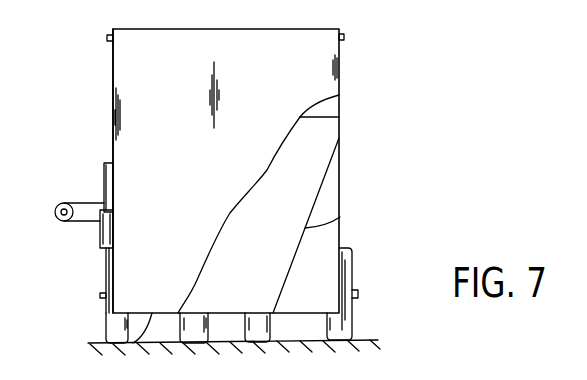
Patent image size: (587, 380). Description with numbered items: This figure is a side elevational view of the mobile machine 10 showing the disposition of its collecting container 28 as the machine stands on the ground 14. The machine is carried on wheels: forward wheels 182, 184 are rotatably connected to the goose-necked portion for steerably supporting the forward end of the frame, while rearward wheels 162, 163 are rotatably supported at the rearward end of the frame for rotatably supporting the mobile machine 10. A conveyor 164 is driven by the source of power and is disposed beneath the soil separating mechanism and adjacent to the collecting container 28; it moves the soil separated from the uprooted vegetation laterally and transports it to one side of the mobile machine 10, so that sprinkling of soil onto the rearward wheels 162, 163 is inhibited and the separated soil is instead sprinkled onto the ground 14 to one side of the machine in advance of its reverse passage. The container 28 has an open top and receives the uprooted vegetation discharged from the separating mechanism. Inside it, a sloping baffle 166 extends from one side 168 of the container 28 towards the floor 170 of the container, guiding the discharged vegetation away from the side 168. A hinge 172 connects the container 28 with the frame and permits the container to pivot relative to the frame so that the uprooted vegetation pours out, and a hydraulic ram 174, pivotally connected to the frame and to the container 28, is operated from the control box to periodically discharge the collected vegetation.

The mobile machine 10 is at (409, 72).
The ground 14 is at (223, 343).
The container 28 is at (128, 76).
The rearward wheel 162 is at (113, 325).
The rearward wheel 163 is at (352, 318).
The conveyor 164 is at (80, 200).
The sloping baffle 166 is at (330, 224).
The side of the container 168 is at (342, 174).
The floor of the container 170 is at (133, 343).
The hinge 172 is at (107, 38).
The hydraulic ram 174 is at (100, 234).
The forward wheel 182 is at (185, 313).
The forward wheel 184 is at (270, 330).